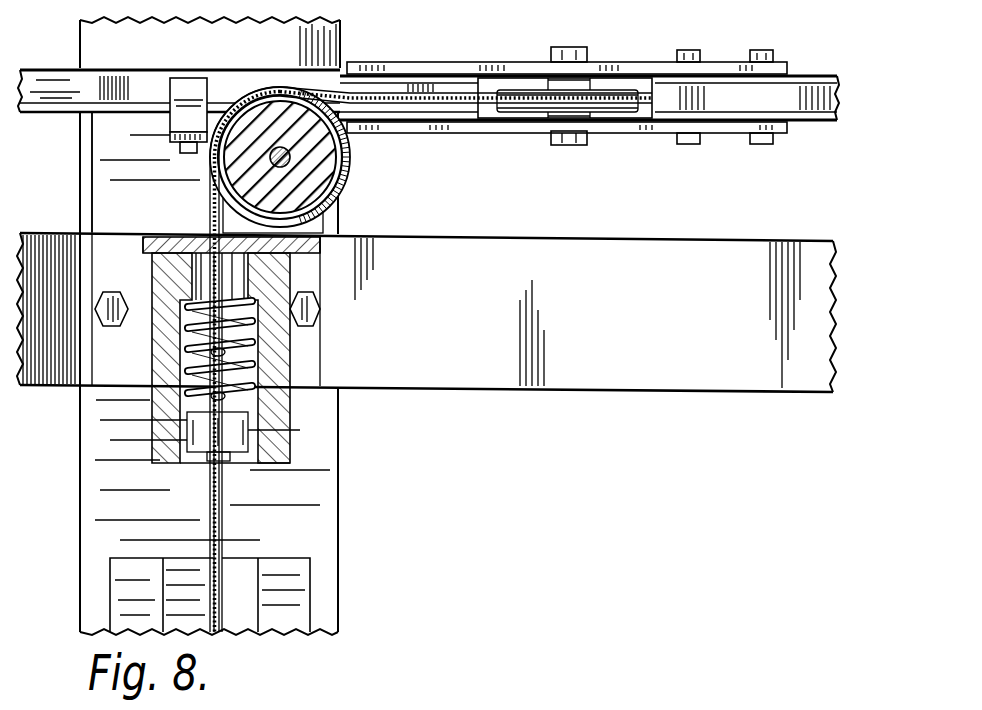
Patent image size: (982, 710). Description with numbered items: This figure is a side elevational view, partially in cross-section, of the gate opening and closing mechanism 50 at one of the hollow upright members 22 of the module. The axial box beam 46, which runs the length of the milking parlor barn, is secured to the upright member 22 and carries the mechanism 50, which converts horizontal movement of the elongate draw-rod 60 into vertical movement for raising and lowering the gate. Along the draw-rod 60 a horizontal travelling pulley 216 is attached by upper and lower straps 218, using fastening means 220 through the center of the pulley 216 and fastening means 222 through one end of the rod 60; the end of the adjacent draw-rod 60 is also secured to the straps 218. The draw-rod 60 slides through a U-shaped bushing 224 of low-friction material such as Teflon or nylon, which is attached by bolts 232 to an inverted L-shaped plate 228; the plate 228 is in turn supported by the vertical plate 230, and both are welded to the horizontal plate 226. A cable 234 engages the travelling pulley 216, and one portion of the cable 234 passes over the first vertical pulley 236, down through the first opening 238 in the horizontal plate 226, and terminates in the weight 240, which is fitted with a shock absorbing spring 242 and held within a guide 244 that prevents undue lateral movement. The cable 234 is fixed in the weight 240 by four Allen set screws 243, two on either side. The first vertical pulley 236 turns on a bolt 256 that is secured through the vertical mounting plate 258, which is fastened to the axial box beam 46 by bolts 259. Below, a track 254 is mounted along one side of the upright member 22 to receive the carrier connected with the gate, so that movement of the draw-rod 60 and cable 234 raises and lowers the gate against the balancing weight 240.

The upright member 22 is at (100, 522).
The axial box beam 46 is at (627, 268).
The gate opening and closing mechanism 50 is at (366, 46).
The draw-rod 60 is at (67, 85).
The horizontal travelling pulley 216 is at (618, 90).
The straps 218 is at (785, 66).
The fastening means 220 is at (555, 52).
The fastening means 222 is at (758, 50).
The U-shaped bushing 224 is at (190, 105).
The horizontal plate 226 is at (150, 257).
The inverted L-shaped plate 228 is at (175, 142).
The vertical plate 230 is at (318, 232).
The bolts 232 is at (188, 155).
The cable 234 is at (395, 100).
The first vertical pulley 236 is at (340, 178).
The first opening 238 is at (212, 237).
The weight 240 is at (233, 465).
The shock absorbing spring 242 is at (258, 352).
The Allen set screws 243 is at (257, 375).
The guide 244 is at (290, 448).
The track 254 is at (287, 628).
The bolt 256 is at (290, 159).
The vertical mounting plate 258 is at (107, 148).
The bolts 259 is at (106, 325).